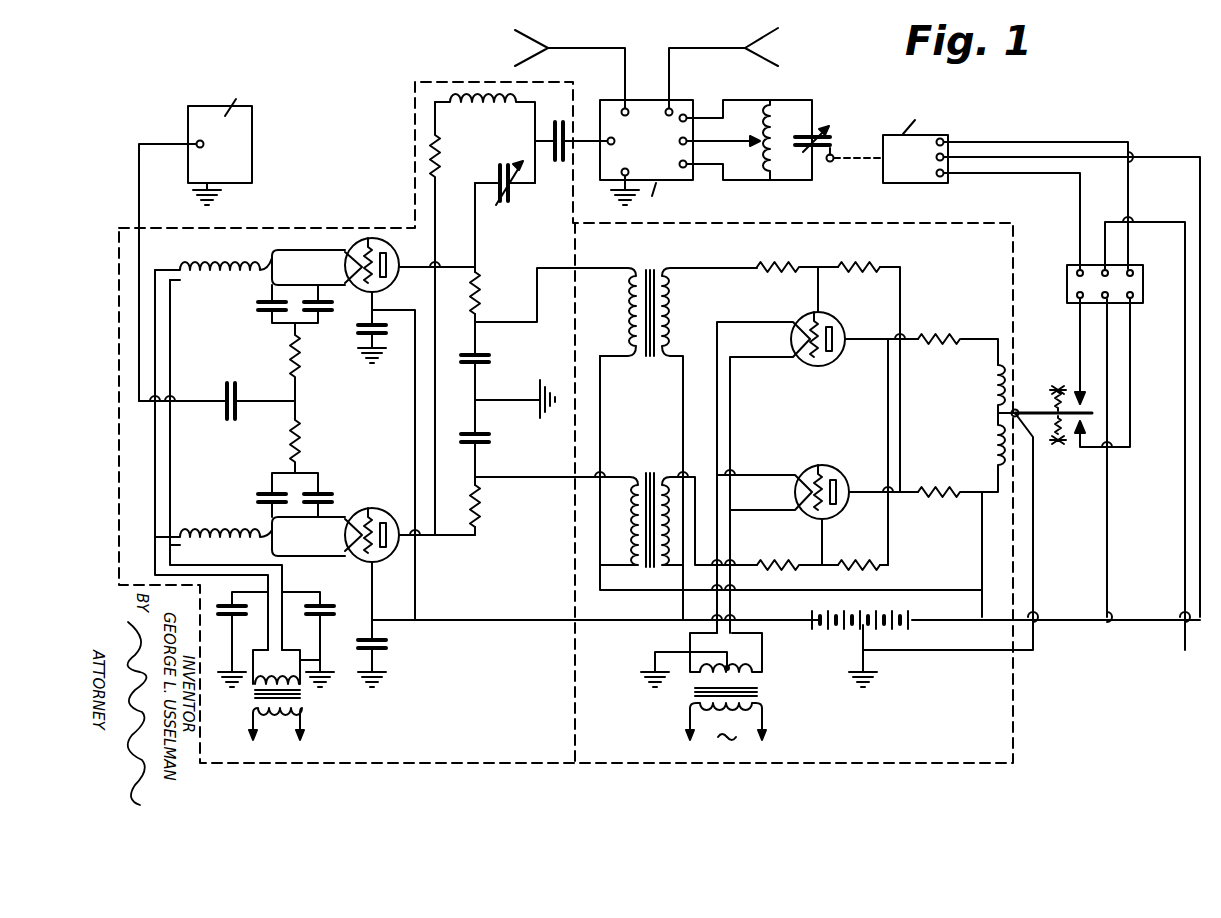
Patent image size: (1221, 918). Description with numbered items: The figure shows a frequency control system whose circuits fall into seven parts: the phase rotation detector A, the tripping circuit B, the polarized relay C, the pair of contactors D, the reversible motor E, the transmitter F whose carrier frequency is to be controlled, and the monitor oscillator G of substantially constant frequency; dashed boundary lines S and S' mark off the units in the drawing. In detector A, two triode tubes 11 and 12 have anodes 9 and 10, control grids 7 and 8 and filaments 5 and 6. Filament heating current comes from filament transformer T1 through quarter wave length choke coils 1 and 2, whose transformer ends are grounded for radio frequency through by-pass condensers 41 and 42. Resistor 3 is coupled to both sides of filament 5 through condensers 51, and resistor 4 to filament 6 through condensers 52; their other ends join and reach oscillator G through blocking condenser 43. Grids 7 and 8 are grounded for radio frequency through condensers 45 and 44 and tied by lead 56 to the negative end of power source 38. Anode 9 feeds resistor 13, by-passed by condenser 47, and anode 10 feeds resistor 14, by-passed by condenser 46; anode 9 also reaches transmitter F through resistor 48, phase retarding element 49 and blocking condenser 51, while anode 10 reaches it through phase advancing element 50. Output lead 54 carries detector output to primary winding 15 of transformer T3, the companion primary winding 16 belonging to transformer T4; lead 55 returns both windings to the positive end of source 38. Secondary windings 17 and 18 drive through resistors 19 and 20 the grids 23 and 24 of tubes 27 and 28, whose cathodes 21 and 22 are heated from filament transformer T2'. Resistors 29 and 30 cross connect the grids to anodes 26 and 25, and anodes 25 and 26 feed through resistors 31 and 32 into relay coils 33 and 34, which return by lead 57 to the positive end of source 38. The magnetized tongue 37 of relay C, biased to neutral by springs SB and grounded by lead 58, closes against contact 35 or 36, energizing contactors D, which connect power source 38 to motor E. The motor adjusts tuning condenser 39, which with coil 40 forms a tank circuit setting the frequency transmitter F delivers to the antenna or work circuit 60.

The choke coil 1 is at (221, 529).
The choke coil 2 is at (225, 281).
The resistor 3 is at (286, 440).
The resistor 4 is at (286, 356).
The filament 5 is at (342, 534).
The filament 6 is at (342, 266).
The control grid 7 is at (372, 510).
The control grid 8 is at (359, 252).
The anode 9 is at (378, 535).
The anode 10 is at (381, 265).
The thermionic triode tube 11 is at (388, 560).
The thermionic triode tube 12 is at (393, 285).
The resistor 13 is at (484, 524).
The resistor 14 is at (484, 311).
The primary winding 15 is at (631, 528).
The primary winding 16 is at (630, 296).
The secondary winding 17 is at (672, 532).
The secondary winding 18 is at (672, 330).
The resistor 19 is at (788, 560).
The resistor 20 is at (762, 258).
The cathode electrode 21 is at (790, 493).
The cathode electrode 22 is at (788, 337).
The grid electrode 23 is at (814, 470).
The grid electrode 24 is at (814, 366).
The anode electrode 25 is at (819, 481).
The anode electrode 26 is at (832, 364).
The thermionic tube 27 is at (830, 472).
The thermionic tube 28 is at (813, 319).
The resistor 29 is at (870, 560).
The resistor 30 is at (845, 258).
The resistor 31 is at (946, 482).
The resistor 32 is at (925, 262).
The relay coil 33 is at (990, 447).
The relay coil 34 is at (990, 388).
The relay contact 35 is at (1099, 429).
The relay contact 36 is at (1084, 392).
The tongue 37 is at (1098, 411).
The power source 38 is at (906, 603).
The tuning condenser 39 is at (824, 132).
The coil 40 is at (779, 181).
The by-pass condenser 41 is at (226, 610).
The by-pass condenser 42 is at (326, 612).
The blocking condenser 43 is at (227, 372).
The condenser 44 is at (387, 341).
The condenser 45 is at (392, 648).
The condenser 46 is at (492, 370).
The condenser 47 is at (492, 450).
The resistor 48 is at (440, 173).
The phase retarding element 49 is at (498, 110).
The phase advancing element 50 is at (510, 201).
The condenser 51 is at (258, 492).
The condenser 52 is at (264, 328).
The output lead 54 is at (548, 478).
The lead 55 is at (614, 592).
The lead 56 is at (541, 616).
The lead 57 is at (982, 547).
The lead 58 is at (1036, 588).
The work circuit 60 is at (563, 48).
The phase rotation detector circuit A is at (477, 700).
The tripping circuit B is at (954, 700).
The polarized relay C is at (1029, 381).
The pair of contactors D is at (1143, 296).
The reversible motor E is at (908, 180).
The transmitter F is at (644, 110).
The monitor oscillator G is at (243, 159).
The south pole S is at (557, 422).
The dashed enclosure line S' is at (1036, 557).
The biasing springs SB is at (1068, 388).
The filament transformer T1 is at (289, 695).
The filament transformer T2' is at (722, 686).
The transformer T3 is at (678, 506).
The transformer T4 is at (678, 429).